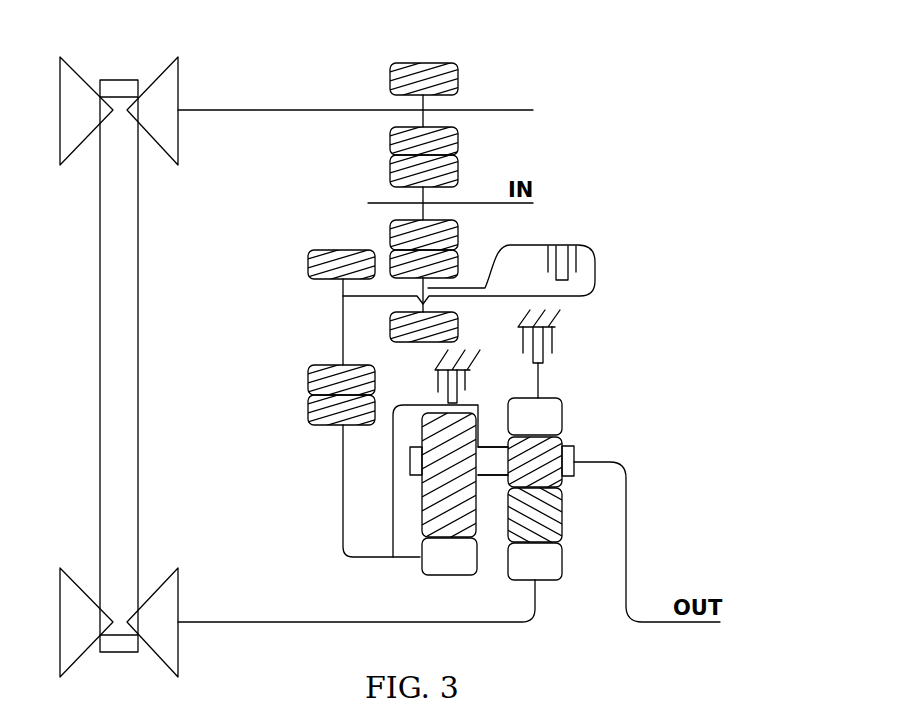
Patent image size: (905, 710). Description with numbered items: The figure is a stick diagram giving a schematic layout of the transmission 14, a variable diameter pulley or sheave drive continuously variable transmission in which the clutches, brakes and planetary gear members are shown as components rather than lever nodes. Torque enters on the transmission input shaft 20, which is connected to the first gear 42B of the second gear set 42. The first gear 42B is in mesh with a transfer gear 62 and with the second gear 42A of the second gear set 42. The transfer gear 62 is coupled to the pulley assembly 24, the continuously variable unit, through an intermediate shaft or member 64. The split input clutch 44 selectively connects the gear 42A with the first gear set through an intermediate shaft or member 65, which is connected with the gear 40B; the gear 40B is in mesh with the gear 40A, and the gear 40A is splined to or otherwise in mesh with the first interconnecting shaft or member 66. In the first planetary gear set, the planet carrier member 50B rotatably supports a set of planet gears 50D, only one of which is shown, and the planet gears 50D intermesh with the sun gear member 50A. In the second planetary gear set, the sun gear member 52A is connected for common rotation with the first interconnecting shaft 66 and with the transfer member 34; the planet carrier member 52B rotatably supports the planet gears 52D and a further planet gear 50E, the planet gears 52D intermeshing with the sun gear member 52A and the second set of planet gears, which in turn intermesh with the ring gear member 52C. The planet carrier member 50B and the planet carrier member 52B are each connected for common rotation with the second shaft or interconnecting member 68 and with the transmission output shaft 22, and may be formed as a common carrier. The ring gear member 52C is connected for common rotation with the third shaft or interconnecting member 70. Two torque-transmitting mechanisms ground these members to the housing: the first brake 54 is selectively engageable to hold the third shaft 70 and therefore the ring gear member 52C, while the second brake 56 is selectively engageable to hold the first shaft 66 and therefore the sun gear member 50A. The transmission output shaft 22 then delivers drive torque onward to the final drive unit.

The transmission 14 is at (729, 109).
The transmission input shaft 20 is at (503, 204).
The transmission output shaft 22 is at (693, 622).
The pulley assembly 24 is at (149, 45).
The transfer member 34 is at (308, 622).
The gear of the first gear set 40A is at (308, 405).
The gear of the first gear set 40B is at (308, 265).
The second gear set 42 is at (388, 253).
The second gear of the second gear set 42A is at (413, 270).
The first gear of the second gear set 42B is at (457, 167).
The split input clutch 44 is at (570, 246).
The sun gear member 50A is at (445, 557).
The planet carrier member 50B is at (412, 465).
The planet gears 50D is at (448, 508).
The gear 50E is at (545, 467).
The sun gear member 52A is at (547, 568).
The planet carrier member 52B is at (577, 452).
The ring gear member 52C is at (550, 423).
The planet gears 52D is at (550, 515).
The first brake 54 is at (552, 348).
The second brake 56 is at (467, 385).
The transfer gear 62 is at (423, 103).
The intermediate shaft or member 64 is at (288, 111).
The intermediate shaft or member 65 is at (578, 295).
The first interconnecting shaft or member 66 is at (343, 467).
The second shaft or interconnecting member 68 is at (493, 478).
The third shaft or interconnecting member 70 is at (538, 387).